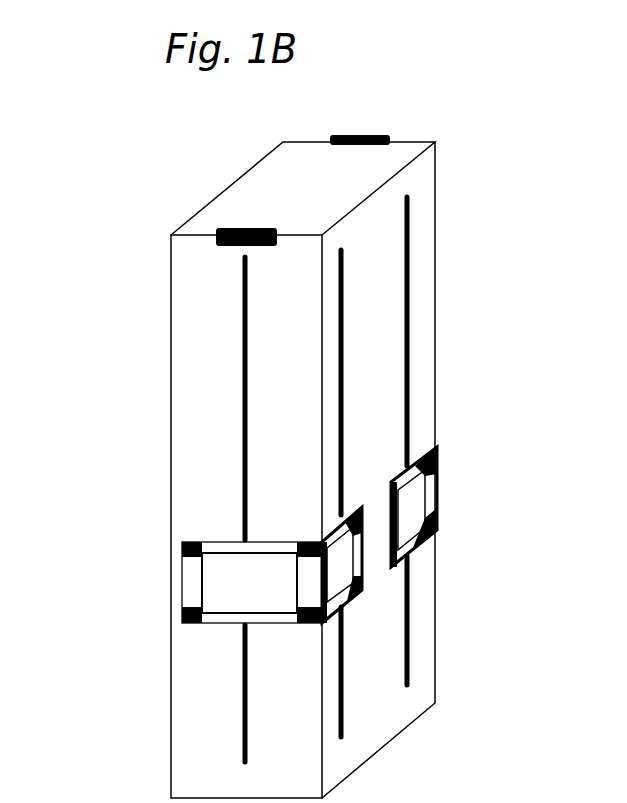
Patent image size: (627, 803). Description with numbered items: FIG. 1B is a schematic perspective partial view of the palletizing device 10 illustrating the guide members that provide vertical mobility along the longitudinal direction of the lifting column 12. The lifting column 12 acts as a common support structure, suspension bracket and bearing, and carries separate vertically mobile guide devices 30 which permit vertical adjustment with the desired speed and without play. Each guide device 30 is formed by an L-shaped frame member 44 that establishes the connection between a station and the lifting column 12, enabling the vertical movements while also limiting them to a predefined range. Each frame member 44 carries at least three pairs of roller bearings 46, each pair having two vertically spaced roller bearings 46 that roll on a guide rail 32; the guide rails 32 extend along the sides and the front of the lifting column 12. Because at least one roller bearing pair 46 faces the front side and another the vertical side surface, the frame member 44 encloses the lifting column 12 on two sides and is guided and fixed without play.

The palletizing device 10 is at (462, 114).
The lifting column 12 is at (243, 198).
The guide rails 32 is at (243, 355).
The guide devices 30 is at (150, 598).
The roller bearings 46 is at (183, 542).
The L-shaped frame members 44 is at (232, 617).